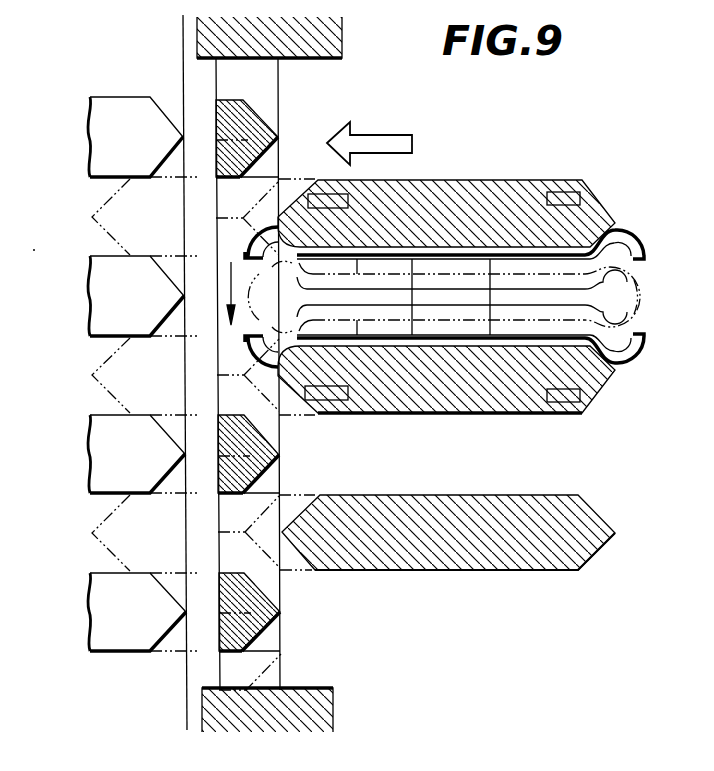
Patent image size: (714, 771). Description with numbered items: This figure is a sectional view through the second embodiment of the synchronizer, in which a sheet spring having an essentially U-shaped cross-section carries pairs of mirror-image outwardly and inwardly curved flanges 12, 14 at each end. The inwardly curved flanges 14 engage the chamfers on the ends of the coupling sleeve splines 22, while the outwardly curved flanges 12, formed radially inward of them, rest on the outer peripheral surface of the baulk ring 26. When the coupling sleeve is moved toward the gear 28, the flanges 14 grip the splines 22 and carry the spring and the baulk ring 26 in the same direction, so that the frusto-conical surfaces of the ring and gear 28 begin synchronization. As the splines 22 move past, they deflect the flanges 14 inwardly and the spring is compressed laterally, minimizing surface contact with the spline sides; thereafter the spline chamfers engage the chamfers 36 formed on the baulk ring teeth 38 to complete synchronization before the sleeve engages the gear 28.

The outwardly curving flange 12 is at (332, 194).
The inwardly curving flange 14 is at (255, 258).
The coupling sleeve spline 22 is at (468, 192).
The baulk ring 26 is at (228, 70).
The gear 28 is at (145, 670).
The chamfer on baulk ring tooth 36 is at (255, 166).
The baulk ring tooth 38 is at (227, 112).